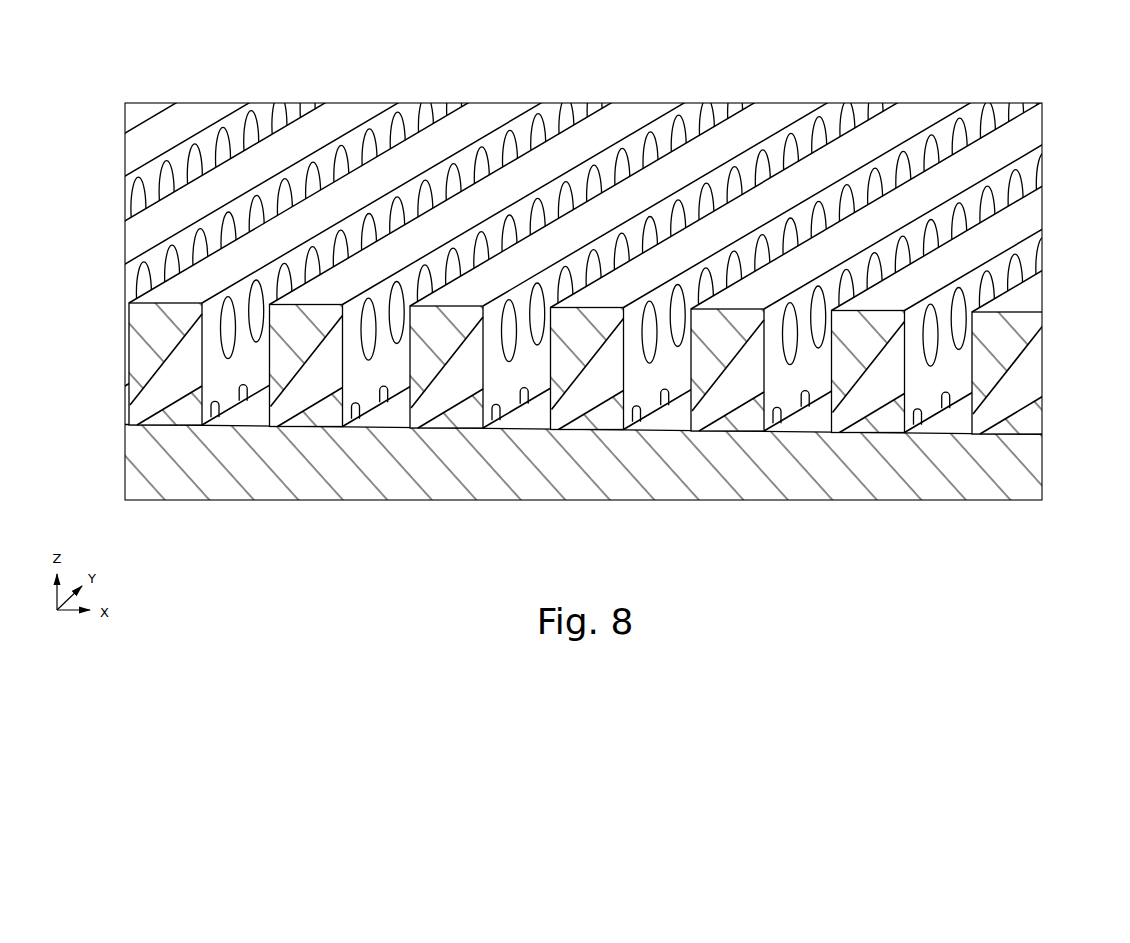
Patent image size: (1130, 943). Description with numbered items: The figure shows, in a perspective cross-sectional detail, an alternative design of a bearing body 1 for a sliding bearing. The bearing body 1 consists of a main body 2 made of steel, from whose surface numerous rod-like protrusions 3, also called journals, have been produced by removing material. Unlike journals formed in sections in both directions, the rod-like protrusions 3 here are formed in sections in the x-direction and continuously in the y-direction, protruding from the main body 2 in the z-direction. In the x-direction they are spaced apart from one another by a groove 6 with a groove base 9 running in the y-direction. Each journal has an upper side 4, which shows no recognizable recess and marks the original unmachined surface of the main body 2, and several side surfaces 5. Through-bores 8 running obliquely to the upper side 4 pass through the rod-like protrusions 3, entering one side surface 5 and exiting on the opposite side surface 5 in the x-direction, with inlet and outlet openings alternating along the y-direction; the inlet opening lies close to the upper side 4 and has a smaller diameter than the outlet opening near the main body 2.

The bearing body 1 is at (1050, 90).
The main body 2 is at (453, 467).
The rod-like protrusions 3 is at (215, 142).
The upper side 4 is at (322, 132).
The side surfaces 5 is at (583, 158).
The groove 6 is at (777, 155).
The through-bores 8 is at (582, 395).
The groove base 9 is at (530, 410).